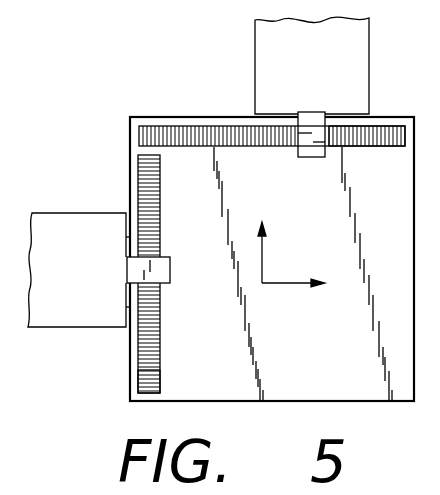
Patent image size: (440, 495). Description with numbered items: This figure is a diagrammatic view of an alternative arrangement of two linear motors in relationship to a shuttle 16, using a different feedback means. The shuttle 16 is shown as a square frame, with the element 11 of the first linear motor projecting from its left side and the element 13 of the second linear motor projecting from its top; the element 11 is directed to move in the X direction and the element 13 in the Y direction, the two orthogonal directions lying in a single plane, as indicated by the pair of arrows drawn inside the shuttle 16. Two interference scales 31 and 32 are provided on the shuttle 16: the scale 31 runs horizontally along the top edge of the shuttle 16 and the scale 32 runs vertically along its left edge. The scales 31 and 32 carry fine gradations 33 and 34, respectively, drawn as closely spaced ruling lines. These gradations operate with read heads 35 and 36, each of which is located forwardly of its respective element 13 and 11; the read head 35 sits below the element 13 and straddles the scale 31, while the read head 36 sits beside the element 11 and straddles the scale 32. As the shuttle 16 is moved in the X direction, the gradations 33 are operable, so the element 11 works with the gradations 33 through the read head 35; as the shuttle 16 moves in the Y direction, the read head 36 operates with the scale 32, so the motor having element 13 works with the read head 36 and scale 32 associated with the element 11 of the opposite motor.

The element 11 is at (59, 219).
The element 13 is at (369, 63).
The shuttle 16 is at (366, 378).
The interference scale 31 is at (208, 128).
The interference scale 32 is at (160, 234).
The fine gradations 33 is at (373, 148).
The fine gradations 34 is at (138, 379).
The read head 35 is at (314, 157).
The read head 36 is at (170, 269).